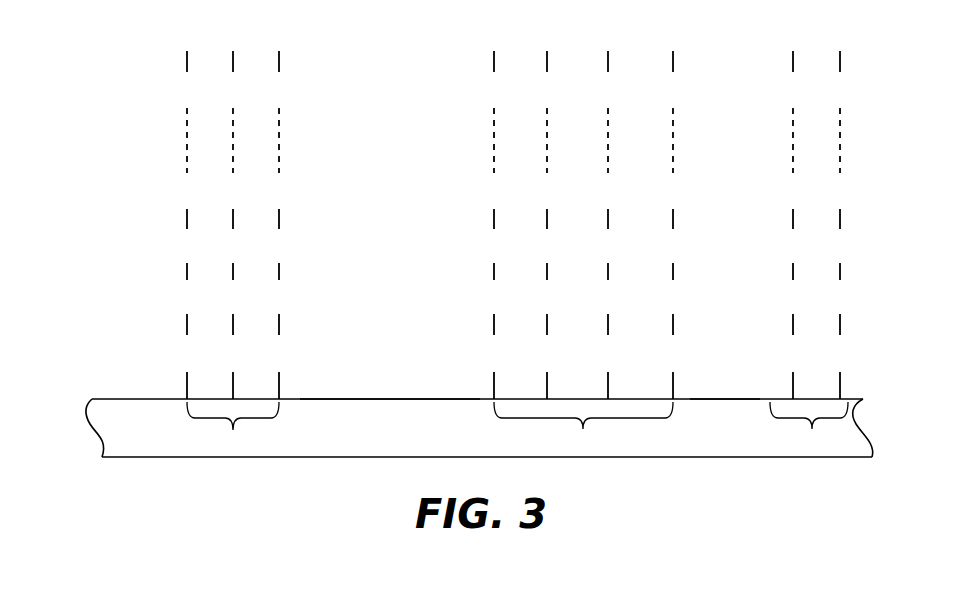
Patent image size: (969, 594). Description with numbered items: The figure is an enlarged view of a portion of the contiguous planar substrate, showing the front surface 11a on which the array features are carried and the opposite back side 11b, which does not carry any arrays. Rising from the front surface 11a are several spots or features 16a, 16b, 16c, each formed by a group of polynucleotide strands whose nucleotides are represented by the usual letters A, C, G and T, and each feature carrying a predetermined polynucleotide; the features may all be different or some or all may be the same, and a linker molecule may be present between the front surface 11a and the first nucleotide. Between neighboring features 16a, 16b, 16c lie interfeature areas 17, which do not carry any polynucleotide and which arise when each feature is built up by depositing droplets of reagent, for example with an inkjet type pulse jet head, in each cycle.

The front surface 11a is at (123, 398).
The back side 11b is at (130, 460).
The feature 16a is at (233, 239).
The feature 16b is at (583, 239).
The feature 16c is at (810, 238).
The interfeature area 17 is at (363, 397).